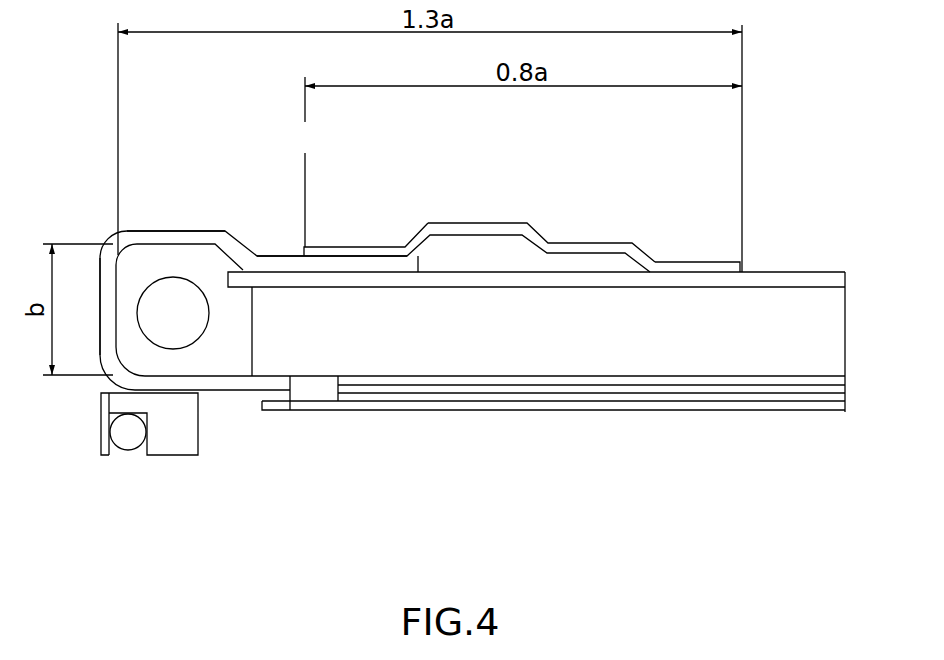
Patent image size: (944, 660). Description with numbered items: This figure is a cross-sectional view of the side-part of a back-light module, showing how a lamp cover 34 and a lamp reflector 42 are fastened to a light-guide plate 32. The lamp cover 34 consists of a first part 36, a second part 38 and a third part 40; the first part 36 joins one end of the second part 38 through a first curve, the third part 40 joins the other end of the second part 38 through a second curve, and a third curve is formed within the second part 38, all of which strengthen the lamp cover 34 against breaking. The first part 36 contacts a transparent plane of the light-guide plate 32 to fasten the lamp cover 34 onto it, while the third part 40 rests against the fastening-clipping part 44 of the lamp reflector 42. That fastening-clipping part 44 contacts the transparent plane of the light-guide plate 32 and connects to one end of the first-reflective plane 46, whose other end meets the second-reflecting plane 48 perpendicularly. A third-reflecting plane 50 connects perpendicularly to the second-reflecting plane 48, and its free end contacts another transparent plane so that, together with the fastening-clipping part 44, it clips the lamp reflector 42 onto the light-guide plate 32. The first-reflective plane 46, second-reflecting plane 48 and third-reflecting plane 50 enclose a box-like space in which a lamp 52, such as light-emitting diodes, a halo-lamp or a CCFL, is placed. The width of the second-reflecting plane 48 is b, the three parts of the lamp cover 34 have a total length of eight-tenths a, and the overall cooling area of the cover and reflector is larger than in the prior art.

The light-guide plate 32 is at (852, 273).
The lamp cover 34 is at (712, 268).
The first part 36 is at (742, 193).
The second part 38 is at (656, 262).
The third part 40 is at (412, 192).
The lamp reflector 42 is at (117, 255).
The fastening-clipping part 44 is at (412, 247).
The first-reflective plane 46 is at (243, 237).
The second-reflecting plane 48 is at (86, 375).
The third-reflecting plane 50 is at (117, 380).
The lamp 52 is at (158, 326).